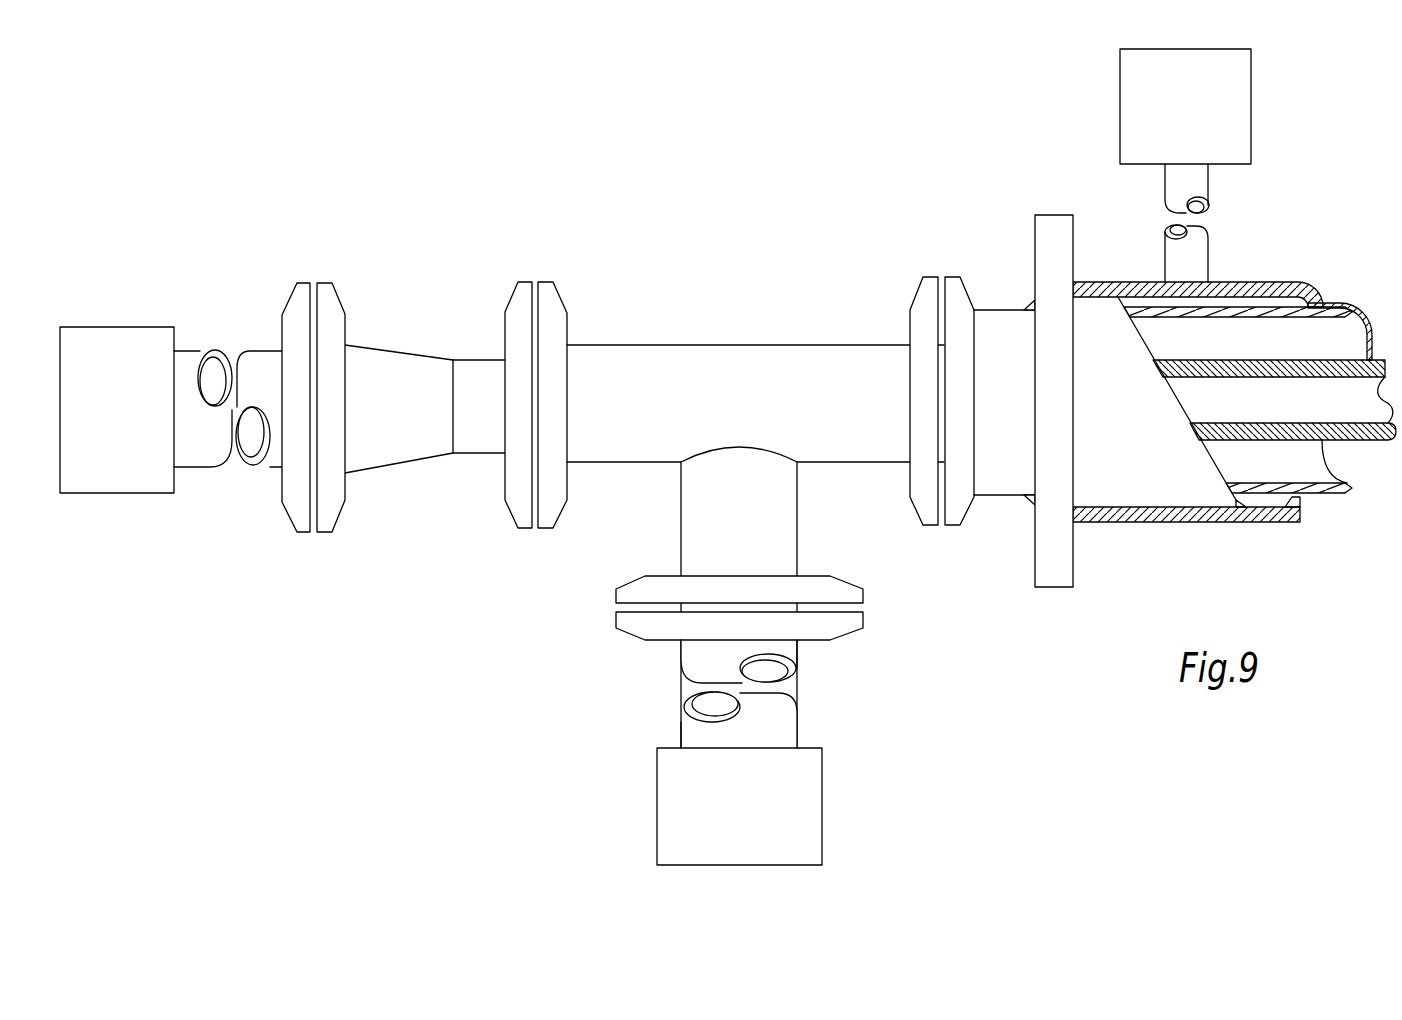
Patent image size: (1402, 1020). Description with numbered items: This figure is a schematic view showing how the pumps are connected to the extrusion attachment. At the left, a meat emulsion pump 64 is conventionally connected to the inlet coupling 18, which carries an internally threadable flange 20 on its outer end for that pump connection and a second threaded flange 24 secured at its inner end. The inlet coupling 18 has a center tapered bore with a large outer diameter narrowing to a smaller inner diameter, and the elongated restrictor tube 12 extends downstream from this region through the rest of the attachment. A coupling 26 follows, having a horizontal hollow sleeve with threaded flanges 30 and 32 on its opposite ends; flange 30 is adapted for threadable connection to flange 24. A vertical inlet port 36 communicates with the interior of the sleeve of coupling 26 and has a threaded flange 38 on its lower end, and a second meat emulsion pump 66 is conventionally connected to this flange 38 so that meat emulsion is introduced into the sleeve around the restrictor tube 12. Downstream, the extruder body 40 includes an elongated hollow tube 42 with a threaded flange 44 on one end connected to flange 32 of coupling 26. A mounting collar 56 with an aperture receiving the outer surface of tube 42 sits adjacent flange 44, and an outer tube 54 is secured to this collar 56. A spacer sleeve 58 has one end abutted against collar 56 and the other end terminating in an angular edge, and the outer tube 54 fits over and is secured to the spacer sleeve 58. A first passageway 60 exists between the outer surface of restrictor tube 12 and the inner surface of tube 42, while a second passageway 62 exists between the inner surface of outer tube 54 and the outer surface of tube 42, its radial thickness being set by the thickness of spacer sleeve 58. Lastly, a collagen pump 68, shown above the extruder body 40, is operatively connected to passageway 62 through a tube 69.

The restrictor tube 12 is at (1367, 435).
The inlet coupling 18 is at (388, 336).
The internally threadable flange 20 is at (339, 298).
The second threaded flange 24 is at (507, 296).
The coupling 26 is at (748, 338).
The threaded flange 30 is at (566, 298).
The threaded flange 32 is at (913, 298).
The vertical inlet port 36 is at (798, 527).
The threaded flange 38 is at (863, 588).
The extruder body 40 is at (1260, 401).
The elongated hollow tube 42 is at (1002, 496).
The threaded flange 44 is at (966, 294).
The outer tube 54 is at (1318, 282).
The mounting collar 56 is at (1052, 587).
The spacer sleeve 58 is at (1150, 482).
The first passageway 60 is at (1272, 463).
The second passageway 62 is at (1252, 498).
The meat emulsion pump 64 is at (115, 330).
The meat emulsion pump 66 is at (817, 811).
The collagen pump 68 is at (1125, 97).
The tube 69 is at (1204, 242).